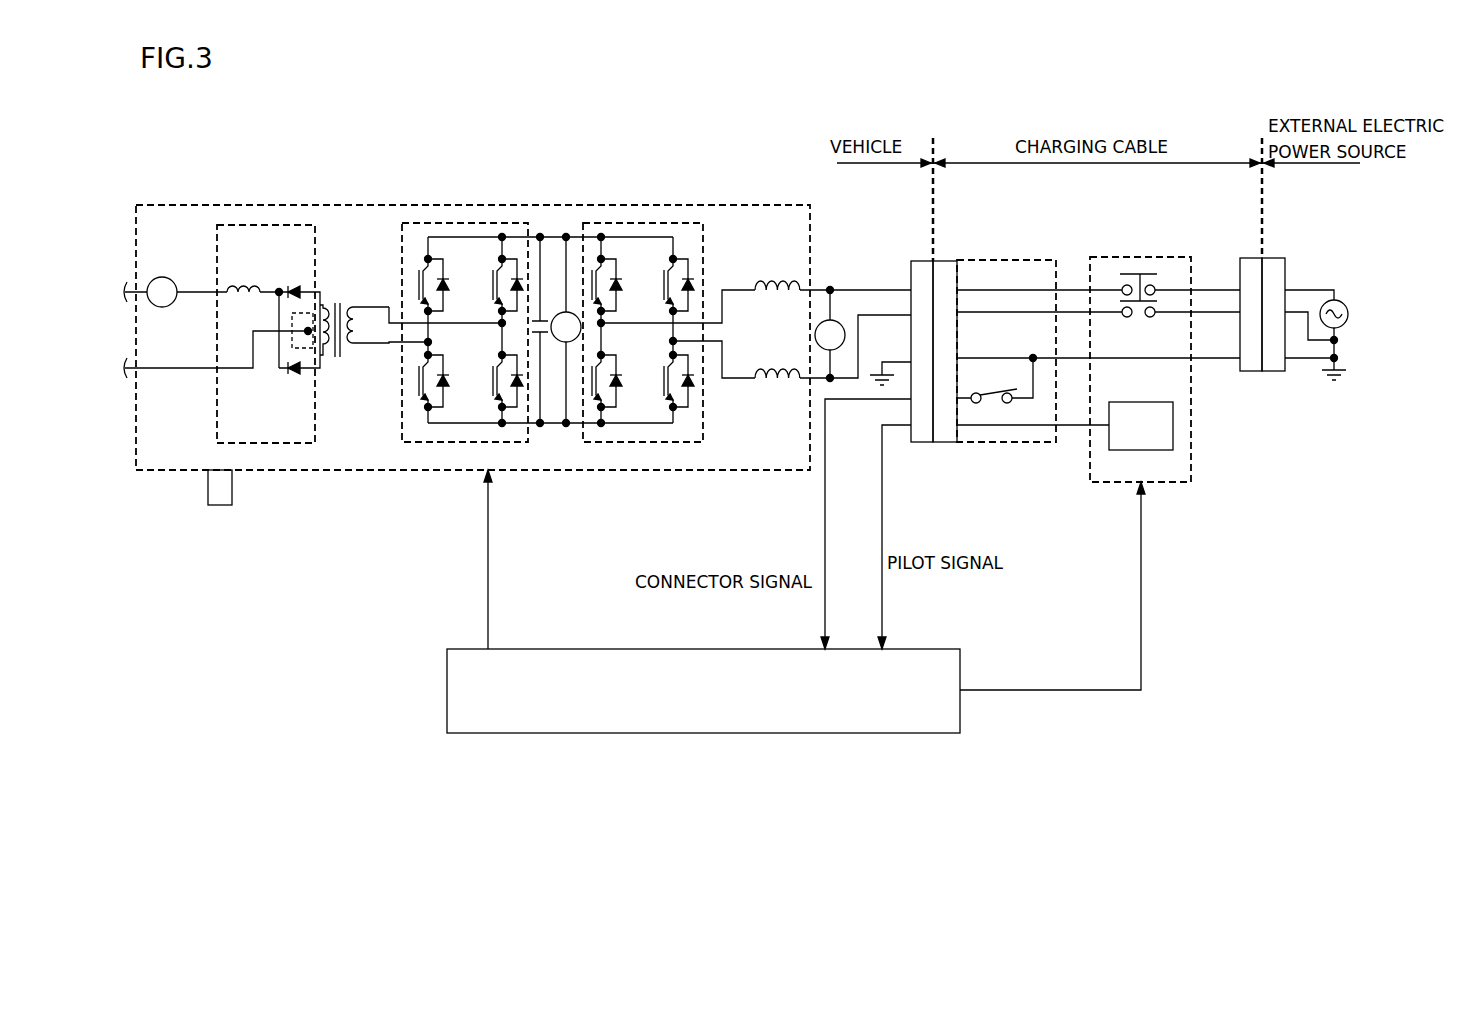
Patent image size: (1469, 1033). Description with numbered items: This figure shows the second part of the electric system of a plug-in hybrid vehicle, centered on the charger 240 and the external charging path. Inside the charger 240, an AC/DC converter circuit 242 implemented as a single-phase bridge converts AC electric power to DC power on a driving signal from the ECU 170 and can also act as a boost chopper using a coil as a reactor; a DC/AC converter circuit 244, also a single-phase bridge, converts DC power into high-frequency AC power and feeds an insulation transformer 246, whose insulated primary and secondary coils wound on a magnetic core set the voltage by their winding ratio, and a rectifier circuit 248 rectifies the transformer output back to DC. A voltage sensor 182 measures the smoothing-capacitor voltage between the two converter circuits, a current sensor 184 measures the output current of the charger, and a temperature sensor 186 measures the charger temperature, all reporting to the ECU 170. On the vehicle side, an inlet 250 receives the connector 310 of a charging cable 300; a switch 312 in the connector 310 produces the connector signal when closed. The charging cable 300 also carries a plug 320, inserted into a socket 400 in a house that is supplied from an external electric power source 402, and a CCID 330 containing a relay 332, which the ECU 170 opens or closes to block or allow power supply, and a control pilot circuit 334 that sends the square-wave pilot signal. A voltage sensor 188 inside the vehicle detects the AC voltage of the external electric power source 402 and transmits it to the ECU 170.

The ECU 170 is at (845, 733).
The voltage sensor 182 is at (563, 342).
The current sensor 184 is at (162, 277).
The temperature sensor 186 is at (220, 505).
The voltage sensor 188 is at (842, 318).
The charger 240 is at (405, 470).
The AC/DC converter circuit 242 is at (630, 442).
The DC/AC converter circuit 244 is at (517, 442).
The insulation transformer 246 is at (348, 373).
The rectifier circuit 248 is at (268, 443).
The inlet 250 is at (921, 261).
The charging cable 300 is at (1054, 250).
The connector 310 is at (945, 261).
The switch 312 is at (992, 408).
The plug 320 is at (1256, 258).
The CCID 330 is at (1165, 372).
The relay 332 is at (1110, 275).
The control pilot circuit 334 is at (1173, 425).
The socket 400 is at (1270, 372).
The external electric power source 402 is at (1342, 290).